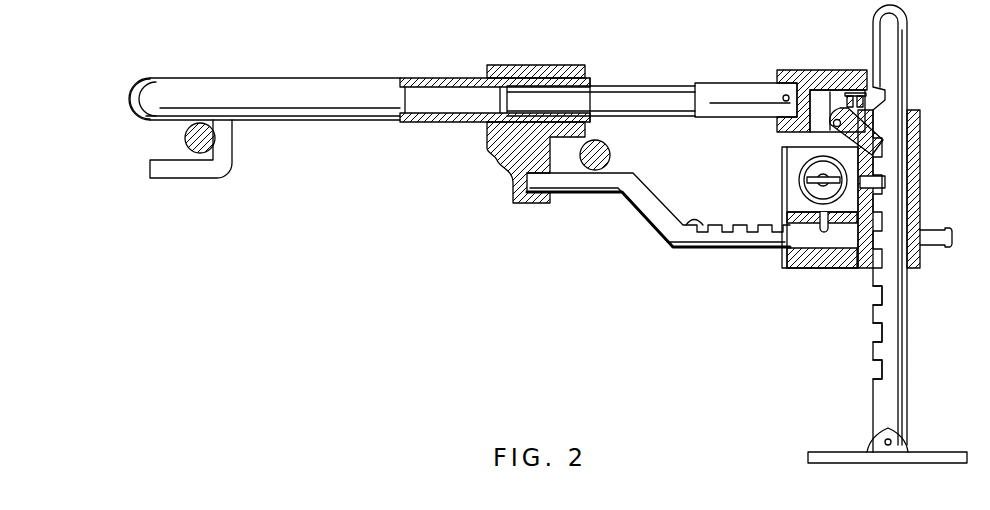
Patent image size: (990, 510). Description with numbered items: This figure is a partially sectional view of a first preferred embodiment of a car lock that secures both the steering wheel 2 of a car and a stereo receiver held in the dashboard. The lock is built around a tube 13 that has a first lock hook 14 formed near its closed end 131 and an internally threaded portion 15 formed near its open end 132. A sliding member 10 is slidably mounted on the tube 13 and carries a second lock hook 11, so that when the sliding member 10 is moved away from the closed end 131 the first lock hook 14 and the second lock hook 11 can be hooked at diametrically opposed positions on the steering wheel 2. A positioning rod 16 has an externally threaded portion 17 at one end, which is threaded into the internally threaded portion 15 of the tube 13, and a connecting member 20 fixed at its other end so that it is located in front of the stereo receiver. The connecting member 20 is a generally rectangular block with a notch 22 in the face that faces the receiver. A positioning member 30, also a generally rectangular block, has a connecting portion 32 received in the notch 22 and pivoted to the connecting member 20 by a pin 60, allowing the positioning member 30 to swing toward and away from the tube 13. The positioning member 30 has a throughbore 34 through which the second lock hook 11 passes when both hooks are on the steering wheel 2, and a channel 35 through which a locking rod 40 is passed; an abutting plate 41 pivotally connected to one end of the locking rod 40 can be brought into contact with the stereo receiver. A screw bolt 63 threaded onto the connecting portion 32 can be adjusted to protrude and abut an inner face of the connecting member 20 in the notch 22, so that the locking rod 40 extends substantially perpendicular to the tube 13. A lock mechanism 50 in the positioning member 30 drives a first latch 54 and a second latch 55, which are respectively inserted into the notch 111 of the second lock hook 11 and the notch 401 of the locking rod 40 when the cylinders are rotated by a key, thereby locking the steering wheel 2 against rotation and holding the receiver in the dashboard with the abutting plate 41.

The steering wheel 2 is at (186, 142).
The sliding member 10 is at (528, 68).
The second lock hook 11 is at (652, 212).
The notch 111 is at (688, 240).
The tube 13 is at (285, 88).
The closed end 131 is at (124, 96).
The open end 132 is at (592, 78).
The first lock hook 14 is at (208, 176).
The internally threaded portion 15 is at (440, 82).
The positioning rod 16 is at (668, 100).
The externally threaded portion 17 is at (626, 86).
The connecting member 20 is at (805, 70).
The notch 22 is at (826, 104).
The positioning member 30 is at (888, 182).
The connecting portion 32 is at (858, 122).
The throughbore 34 is at (835, 270).
The channel 35 is at (921, 163).
The locking rod 40 is at (908, 350).
The notch 401 is at (879, 328).
The abutting plate 41 is at (906, 460).
The lock mechanism 50 is at (782, 178).
The first latch 54 is at (800, 232).
The second latch 55 is at (884, 189).
The pin 60 is at (832, 126).
The screw bolt 63 is at (864, 98).